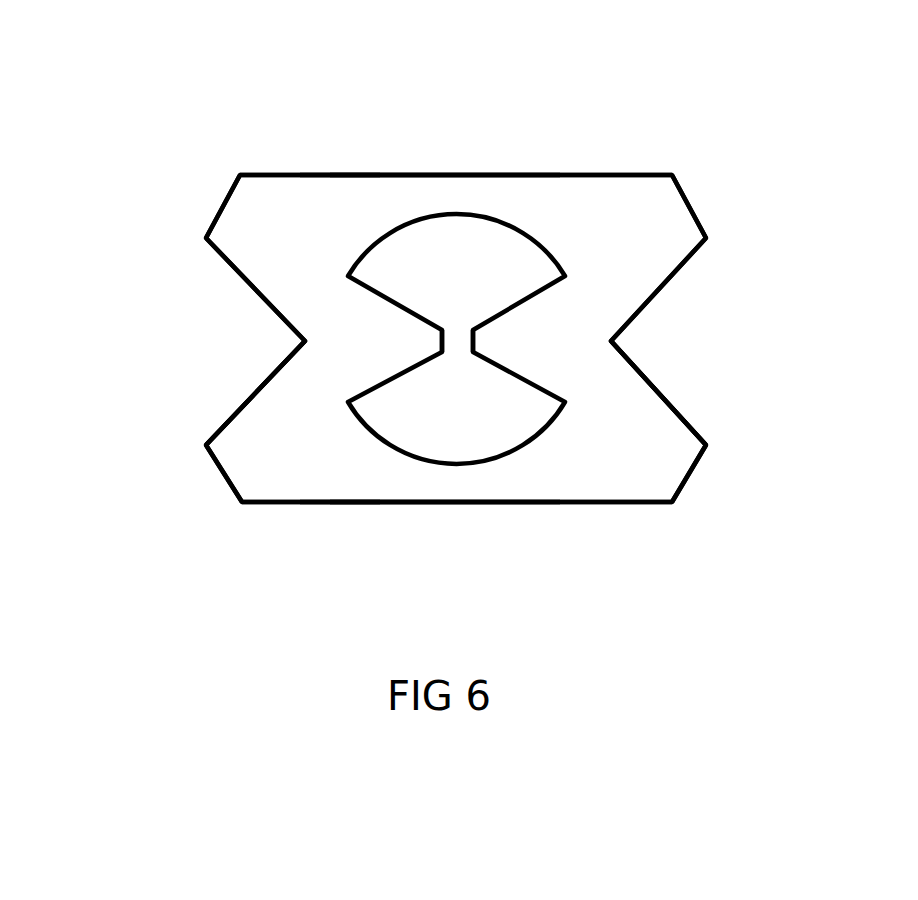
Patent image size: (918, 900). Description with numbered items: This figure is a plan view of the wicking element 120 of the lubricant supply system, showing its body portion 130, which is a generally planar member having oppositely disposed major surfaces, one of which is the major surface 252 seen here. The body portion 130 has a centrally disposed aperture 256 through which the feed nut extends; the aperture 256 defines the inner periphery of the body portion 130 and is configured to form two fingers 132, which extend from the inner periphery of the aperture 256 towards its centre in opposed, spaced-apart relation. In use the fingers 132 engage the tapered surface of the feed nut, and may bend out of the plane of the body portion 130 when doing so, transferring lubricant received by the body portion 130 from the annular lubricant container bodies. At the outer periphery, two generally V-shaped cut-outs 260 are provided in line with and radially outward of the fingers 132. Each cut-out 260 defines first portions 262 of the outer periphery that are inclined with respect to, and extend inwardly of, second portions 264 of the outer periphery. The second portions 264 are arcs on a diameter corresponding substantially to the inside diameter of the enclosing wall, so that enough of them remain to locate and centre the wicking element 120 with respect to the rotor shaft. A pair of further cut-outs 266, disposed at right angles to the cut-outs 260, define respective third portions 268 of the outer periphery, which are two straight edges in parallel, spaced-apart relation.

The wicking element 120 is at (205, 88).
The body portion 130 is at (638, 197).
The finger 132 is at (495, 357).
The major surface 252 is at (636, 476).
The aperture 256 is at (478, 216).
The cut-out 260 is at (190, 312).
The first portion of the outer periphery 262 is at (232, 413).
The second portion of the outer periphery 264 is at (228, 197).
The further cut-out 266 is at (441, 162).
The third portion of the outer periphery 268 is at (338, 176).